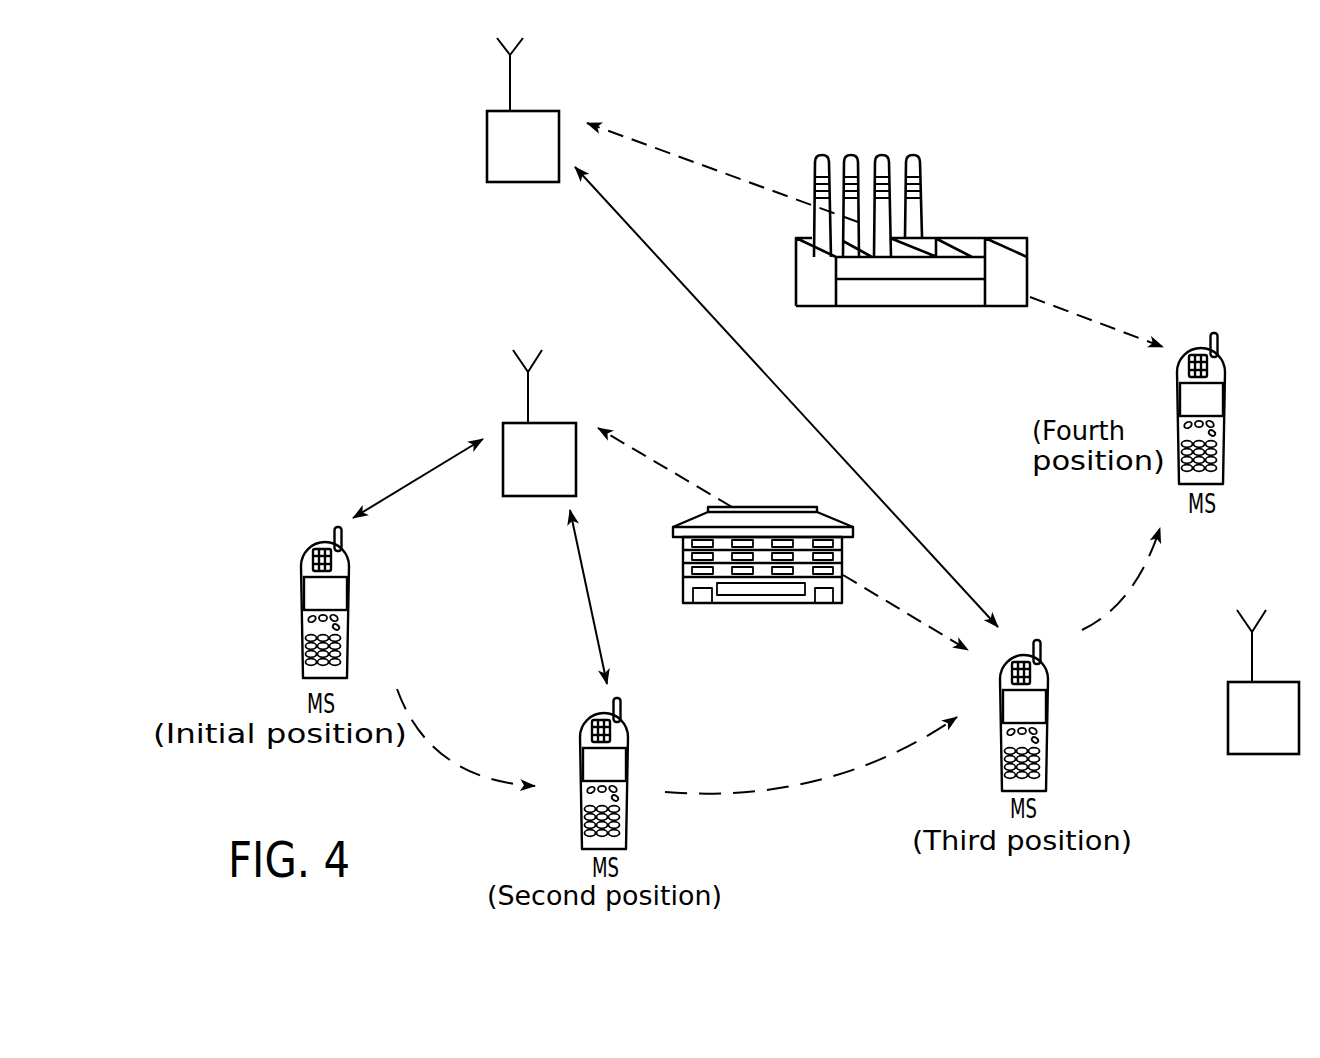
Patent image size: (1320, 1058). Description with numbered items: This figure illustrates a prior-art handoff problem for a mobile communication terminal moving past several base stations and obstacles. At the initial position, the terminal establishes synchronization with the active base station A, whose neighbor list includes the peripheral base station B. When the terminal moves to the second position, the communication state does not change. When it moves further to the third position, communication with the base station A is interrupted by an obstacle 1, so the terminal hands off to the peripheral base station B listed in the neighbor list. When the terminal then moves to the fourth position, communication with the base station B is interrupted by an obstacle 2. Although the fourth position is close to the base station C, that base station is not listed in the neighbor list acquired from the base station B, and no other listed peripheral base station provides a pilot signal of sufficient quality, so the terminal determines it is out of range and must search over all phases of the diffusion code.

The obstacle 1 is at (763, 573).
The obstacle 2 is at (911, 250).
The base station BS- A is at (539, 423).
The base station BS- B is at (523, 110).
The base station BS- C is at (1263, 682).